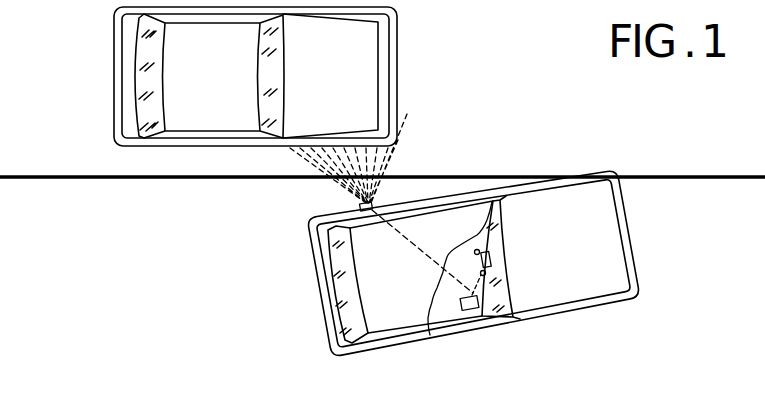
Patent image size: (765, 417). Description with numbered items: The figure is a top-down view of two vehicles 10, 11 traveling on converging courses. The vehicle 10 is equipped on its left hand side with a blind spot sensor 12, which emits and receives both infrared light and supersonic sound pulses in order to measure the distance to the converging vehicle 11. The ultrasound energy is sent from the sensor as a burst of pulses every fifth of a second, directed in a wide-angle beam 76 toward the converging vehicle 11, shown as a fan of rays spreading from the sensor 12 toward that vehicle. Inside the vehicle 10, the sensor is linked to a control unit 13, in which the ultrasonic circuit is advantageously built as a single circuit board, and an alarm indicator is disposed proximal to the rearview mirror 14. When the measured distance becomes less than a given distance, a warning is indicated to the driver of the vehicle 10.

The vehicle 10 is at (569, 321).
The converging vehicle 11 is at (373, 63).
The blind spot sensor 12 is at (358, 206).
The control unit 13 is at (468, 310).
The rearview mirror 14 is at (492, 254).
The wide-angle beam 76 is at (368, 163).